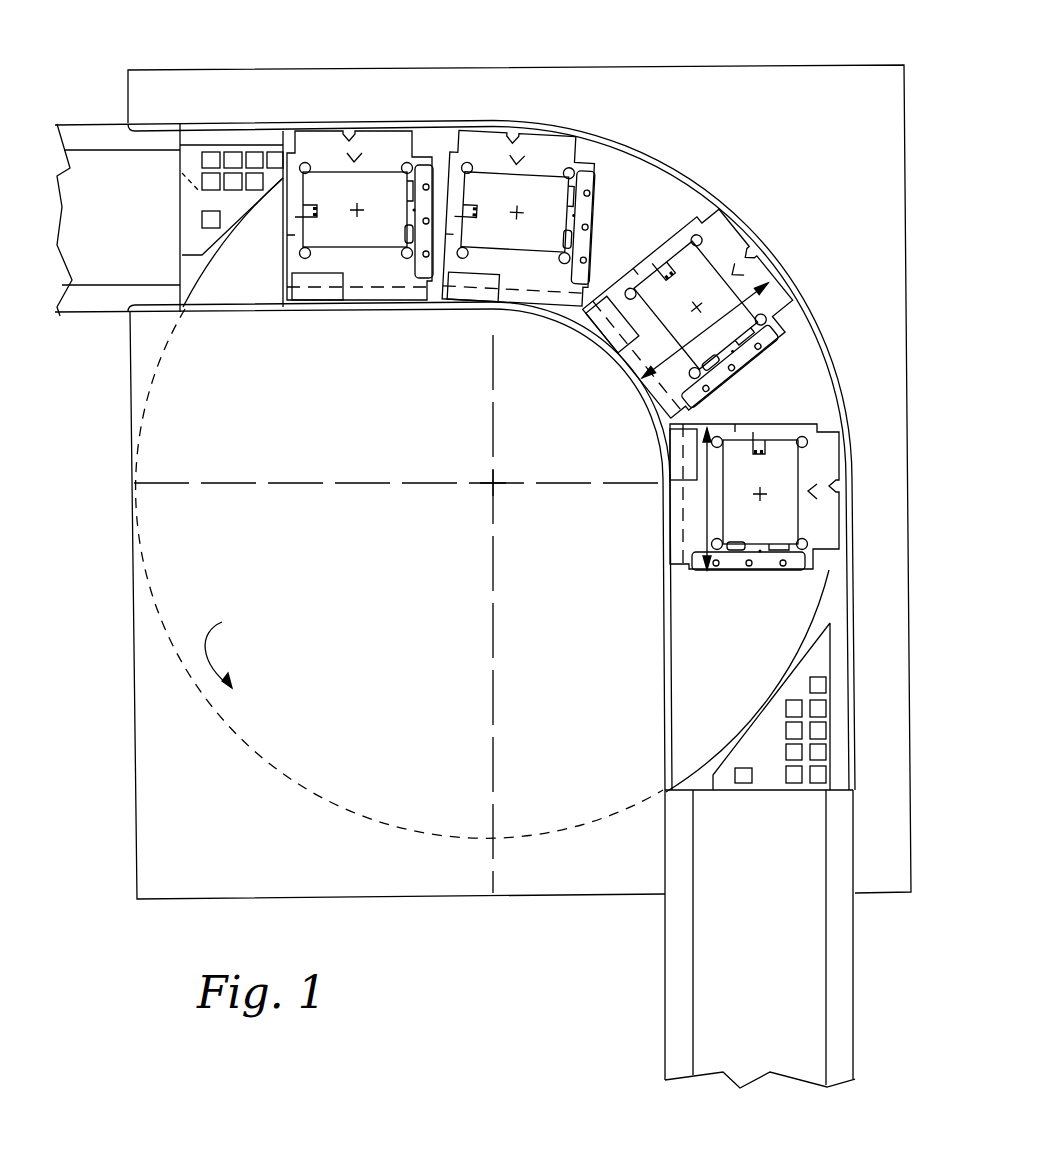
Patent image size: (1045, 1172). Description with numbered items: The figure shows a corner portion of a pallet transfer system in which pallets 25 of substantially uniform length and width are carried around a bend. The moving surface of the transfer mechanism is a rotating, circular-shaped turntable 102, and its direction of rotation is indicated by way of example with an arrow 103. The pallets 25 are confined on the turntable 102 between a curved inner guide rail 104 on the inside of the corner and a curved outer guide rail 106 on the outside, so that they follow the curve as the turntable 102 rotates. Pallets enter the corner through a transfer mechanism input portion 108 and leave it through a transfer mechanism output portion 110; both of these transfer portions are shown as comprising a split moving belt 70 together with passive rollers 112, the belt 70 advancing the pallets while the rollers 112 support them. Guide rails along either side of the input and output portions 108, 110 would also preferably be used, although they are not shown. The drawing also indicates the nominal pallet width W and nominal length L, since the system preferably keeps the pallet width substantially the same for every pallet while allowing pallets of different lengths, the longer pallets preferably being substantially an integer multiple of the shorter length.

The pallet 25 is at (432, 100).
The split moving belt 70 is at (88, 148).
The turntable 102 is at (416, 691).
The arrow 103 is at (238, 649).
The curved inner guide rail 104 is at (604, 362).
The curved outer guide rail 106 is at (812, 322).
The transfer mechanism input portion 108 is at (770, 889).
The transfer mechanism output portion 110 is at (149, 259).
The passive rollers 112 is at (233, 153).